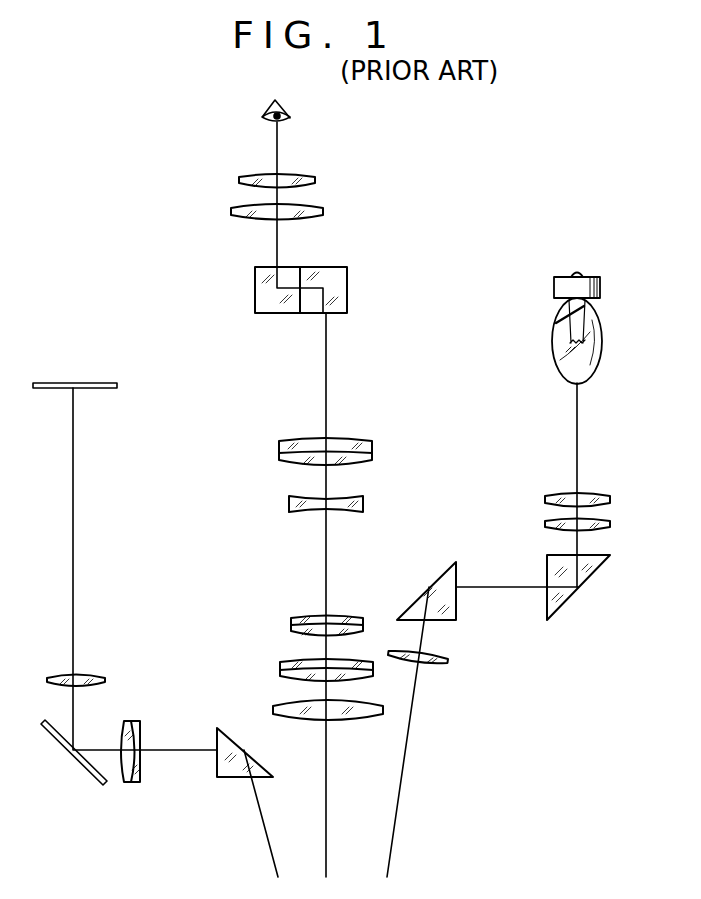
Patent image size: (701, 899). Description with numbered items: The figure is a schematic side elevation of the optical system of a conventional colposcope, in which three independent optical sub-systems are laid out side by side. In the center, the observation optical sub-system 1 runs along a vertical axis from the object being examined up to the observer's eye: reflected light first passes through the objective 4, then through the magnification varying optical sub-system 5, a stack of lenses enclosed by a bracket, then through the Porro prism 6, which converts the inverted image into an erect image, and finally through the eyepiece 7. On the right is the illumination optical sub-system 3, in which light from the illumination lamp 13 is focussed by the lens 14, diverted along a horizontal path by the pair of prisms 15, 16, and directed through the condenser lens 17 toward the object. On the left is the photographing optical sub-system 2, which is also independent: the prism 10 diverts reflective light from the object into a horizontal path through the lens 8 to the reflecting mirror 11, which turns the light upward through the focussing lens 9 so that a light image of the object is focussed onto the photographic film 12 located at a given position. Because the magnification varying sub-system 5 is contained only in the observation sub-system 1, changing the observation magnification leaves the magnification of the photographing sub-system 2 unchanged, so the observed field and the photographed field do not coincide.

The observation optical sub-system 1 is at (313, 397).
The photographing optical sub-system 2 is at (107, 548).
The illumination optical sub-system 3 is at (565, 454).
The objective 4 is at (357, 713).
The magnification varying optical sub-system 5 is at (270, 440).
The Porro prism 6 is at (349, 296).
The eyepiece 7 is at (335, 172).
The lens 8 is at (130, 783).
The focussing lens 9 is at (55, 673).
The prism 10 is at (228, 770).
The reflecting mirror 11 is at (85, 768).
The photographic film 12 is at (104, 383).
The illumination lamp 13 is at (597, 331).
The lens 14 is at (620, 492).
The prism 15 is at (594, 573).
The prism 16 is at (452, 611).
The condenser lens 17 is at (438, 663).